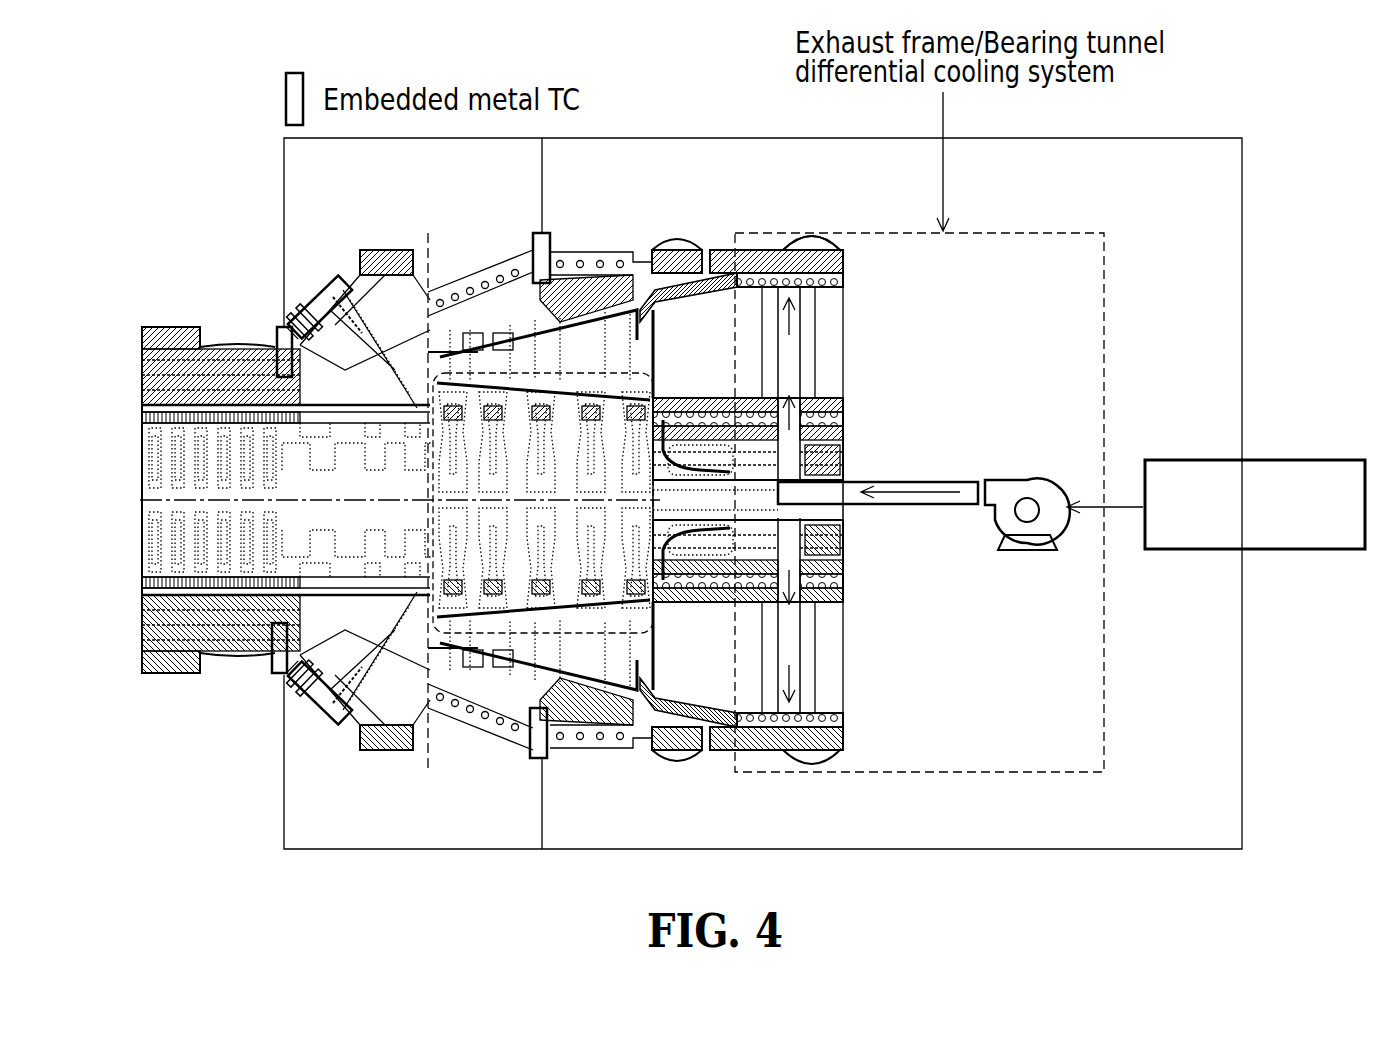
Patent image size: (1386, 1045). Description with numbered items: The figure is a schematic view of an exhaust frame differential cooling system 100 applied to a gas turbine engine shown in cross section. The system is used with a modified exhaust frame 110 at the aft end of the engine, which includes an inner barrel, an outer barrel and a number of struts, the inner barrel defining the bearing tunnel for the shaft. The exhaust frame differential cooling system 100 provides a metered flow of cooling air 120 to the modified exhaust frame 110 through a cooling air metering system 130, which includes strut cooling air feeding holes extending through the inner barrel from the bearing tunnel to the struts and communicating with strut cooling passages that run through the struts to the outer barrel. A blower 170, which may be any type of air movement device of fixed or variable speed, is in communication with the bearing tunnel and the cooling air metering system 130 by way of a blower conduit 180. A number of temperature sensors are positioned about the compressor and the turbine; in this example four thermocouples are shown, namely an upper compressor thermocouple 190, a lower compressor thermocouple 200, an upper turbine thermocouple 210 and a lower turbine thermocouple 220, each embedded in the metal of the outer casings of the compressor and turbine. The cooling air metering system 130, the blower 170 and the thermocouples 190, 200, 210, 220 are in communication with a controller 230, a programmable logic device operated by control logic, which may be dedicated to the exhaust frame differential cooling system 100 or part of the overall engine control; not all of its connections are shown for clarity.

The exhaust frame differential cooling system 100 is at (1050, 226).
The modified exhaust frame 110 is at (862, 270).
The cooling air 120 is at (918, 490).
The cooling air metering system 130 is at (800, 483).
The blower 170 is at (1013, 482).
The blower conduit 180 is at (872, 505).
The upper compressor thermocouple 190 is at (285, 327).
The lower compressor thermocouple 200 is at (278, 672).
The upper turbine thermocouple 210 is at (552, 252).
The lower turbine thermocouple 220 is at (550, 748).
The controller 230 is at (1198, 460).